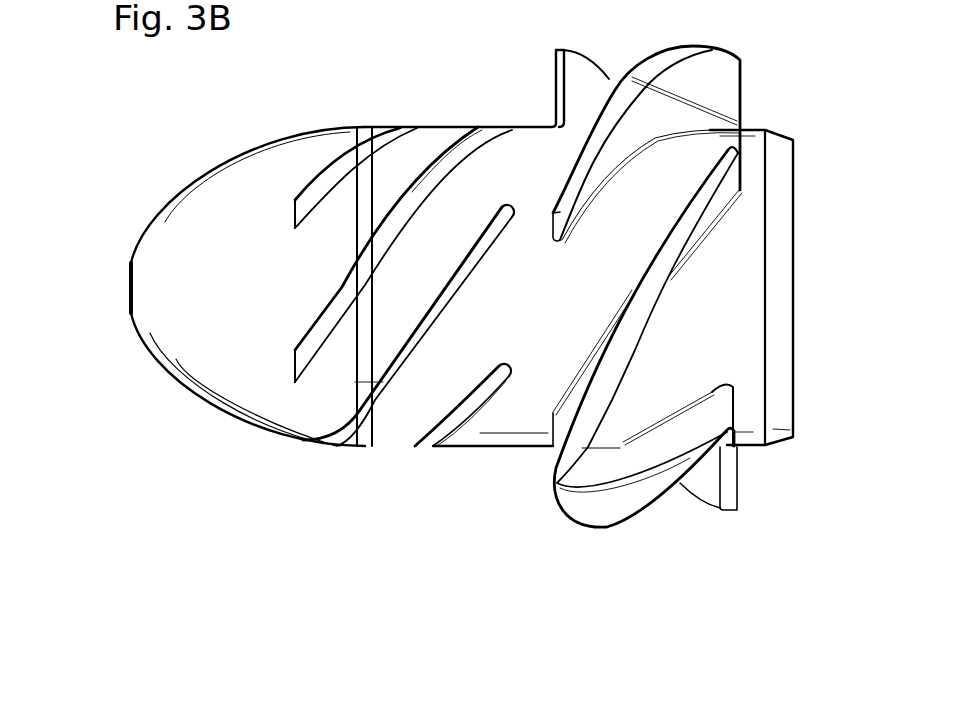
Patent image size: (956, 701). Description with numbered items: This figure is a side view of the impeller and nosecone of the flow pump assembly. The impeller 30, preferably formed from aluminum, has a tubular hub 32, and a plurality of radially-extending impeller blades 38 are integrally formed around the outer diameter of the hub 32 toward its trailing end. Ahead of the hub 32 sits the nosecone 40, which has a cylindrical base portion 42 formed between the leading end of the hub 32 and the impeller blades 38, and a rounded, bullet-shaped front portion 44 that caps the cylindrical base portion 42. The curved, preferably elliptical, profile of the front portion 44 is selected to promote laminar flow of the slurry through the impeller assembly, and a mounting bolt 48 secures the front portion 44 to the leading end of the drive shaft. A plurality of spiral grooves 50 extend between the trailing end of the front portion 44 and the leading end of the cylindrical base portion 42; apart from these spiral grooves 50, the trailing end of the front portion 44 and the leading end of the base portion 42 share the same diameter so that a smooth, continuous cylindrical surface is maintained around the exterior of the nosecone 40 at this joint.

The impeller 30 is at (672, 520).
The tubular hub 32 is at (566, 310).
The impeller blades 38 is at (697, 85).
The nosecone 40 is at (132, 107).
The cylindrical base portion 42 is at (340, 448).
The rounded front portion 44 is at (157, 219).
The mounting bolt 48 is at (130, 287).
The spiral grooves 50 is at (324, 178).